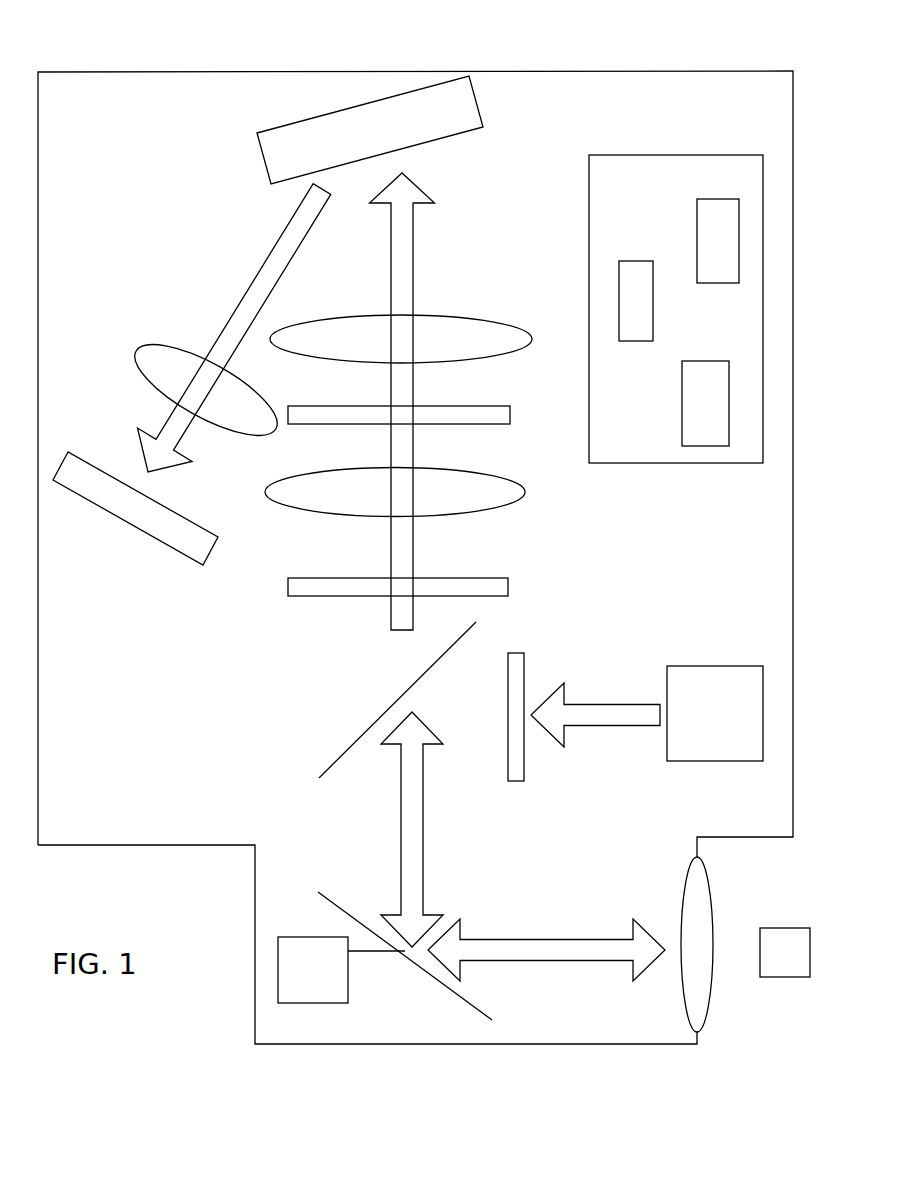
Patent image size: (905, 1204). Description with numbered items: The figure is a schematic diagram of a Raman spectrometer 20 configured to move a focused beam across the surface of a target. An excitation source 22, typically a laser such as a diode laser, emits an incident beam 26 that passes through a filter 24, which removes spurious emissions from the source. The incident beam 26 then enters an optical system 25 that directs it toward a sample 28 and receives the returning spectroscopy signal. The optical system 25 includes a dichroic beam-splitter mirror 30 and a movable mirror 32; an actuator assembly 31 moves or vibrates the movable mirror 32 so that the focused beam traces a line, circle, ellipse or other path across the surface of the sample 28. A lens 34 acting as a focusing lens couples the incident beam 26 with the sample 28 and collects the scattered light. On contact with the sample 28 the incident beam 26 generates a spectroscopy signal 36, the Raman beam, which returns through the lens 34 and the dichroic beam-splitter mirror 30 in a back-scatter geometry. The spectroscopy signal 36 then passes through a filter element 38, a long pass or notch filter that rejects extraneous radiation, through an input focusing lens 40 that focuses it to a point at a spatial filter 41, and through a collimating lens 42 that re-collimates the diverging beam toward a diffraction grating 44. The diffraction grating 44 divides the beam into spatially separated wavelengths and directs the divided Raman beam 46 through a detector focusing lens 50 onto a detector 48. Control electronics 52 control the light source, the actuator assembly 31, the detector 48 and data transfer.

The spectrometer 20 is at (182, 50).
The excitation source 22 is at (715, 713).
The filter 24 is at (516, 781).
The optical system 25 is at (284, 718).
The incident beam 26 is at (588, 725).
The sample 28 is at (785, 952).
The dichroic beam-splitter mirror 30 is at (326, 772).
The actuator assembly 31 is at (341, 970).
The movable mirror 32 is at (410, 958).
The lens 34 is at (710, 988).
The spectroscopy signal 36 is at (412, 268).
The filter element 38 is at (506, 575).
The input focusing lens 40 is at (507, 498).
The spatial filter 41 is at (475, 417).
The collimating lens 42 is at (475, 358).
The diffraction grating 44 is at (458, 141).
The divided Raman beam 46 is at (250, 288).
The detector 48 is at (142, 533).
The detector focusing lens 50 is at (167, 348).
The control electronics 52 is at (676, 309).